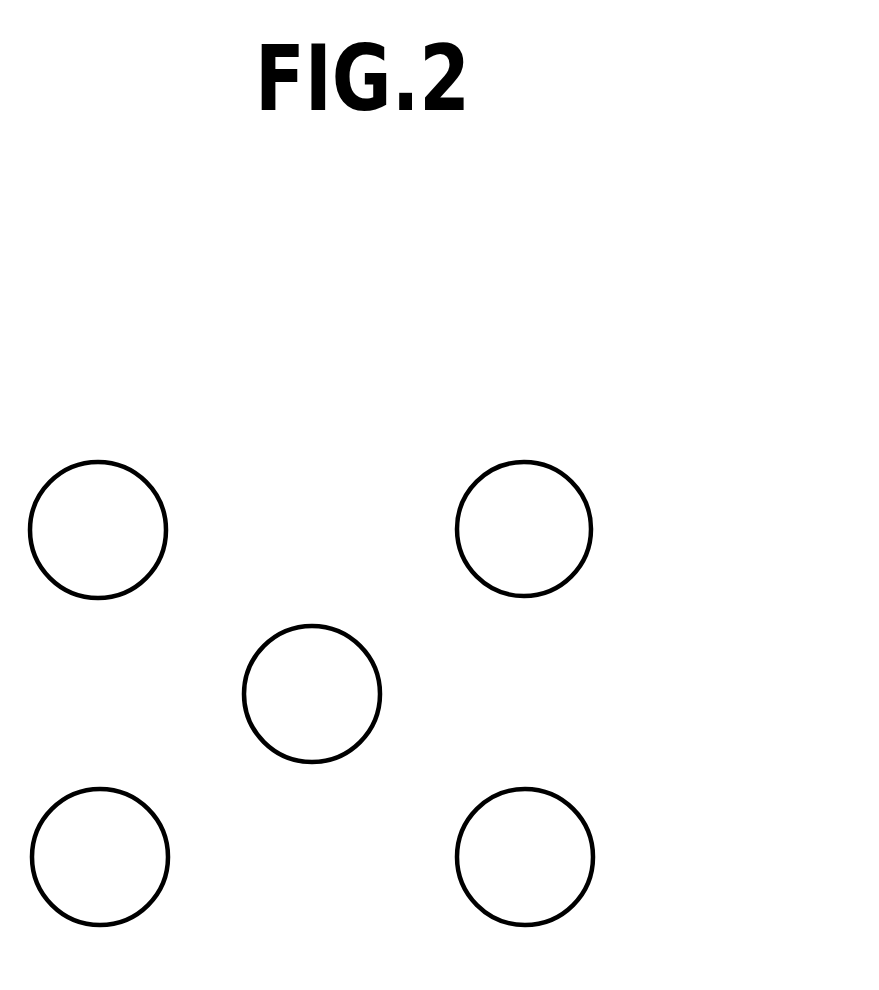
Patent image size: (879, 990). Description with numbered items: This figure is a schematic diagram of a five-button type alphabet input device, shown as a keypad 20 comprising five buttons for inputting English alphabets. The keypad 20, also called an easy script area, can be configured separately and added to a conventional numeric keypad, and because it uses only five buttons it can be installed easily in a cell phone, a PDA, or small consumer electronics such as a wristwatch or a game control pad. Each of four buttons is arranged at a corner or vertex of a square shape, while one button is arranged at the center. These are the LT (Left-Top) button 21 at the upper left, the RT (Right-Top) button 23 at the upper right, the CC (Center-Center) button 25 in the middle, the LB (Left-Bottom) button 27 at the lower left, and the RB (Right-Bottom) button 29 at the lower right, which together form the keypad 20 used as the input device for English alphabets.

The keypad 20 is at (715, 563).
The LT (Left-Top) button 21 is at (156, 493).
The RT (Right-Top) button 23 is at (582, 492).
The CC (Center-Center) button 25 is at (370, 657).
The LB (Left-Bottom) button 27 is at (158, 820).
The RB (Right-Bottom) button 29 is at (583, 820).